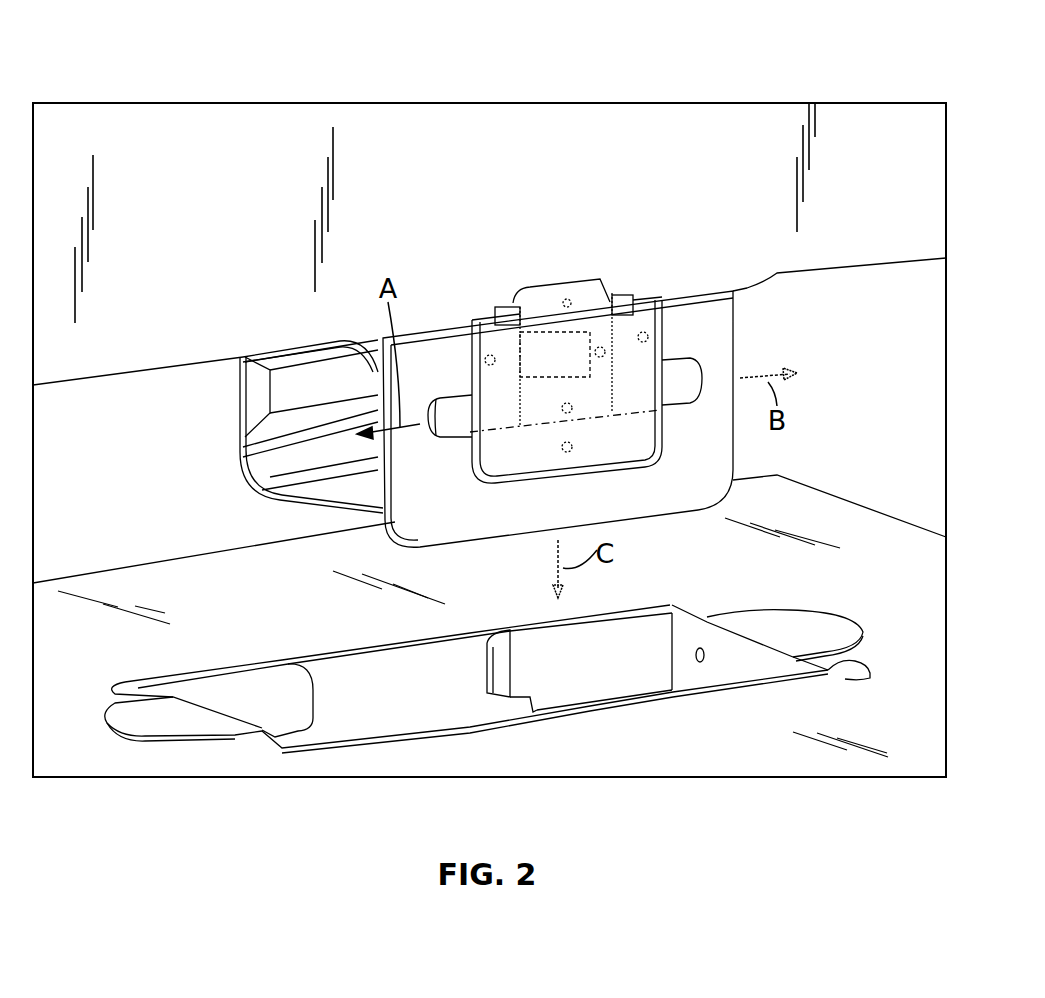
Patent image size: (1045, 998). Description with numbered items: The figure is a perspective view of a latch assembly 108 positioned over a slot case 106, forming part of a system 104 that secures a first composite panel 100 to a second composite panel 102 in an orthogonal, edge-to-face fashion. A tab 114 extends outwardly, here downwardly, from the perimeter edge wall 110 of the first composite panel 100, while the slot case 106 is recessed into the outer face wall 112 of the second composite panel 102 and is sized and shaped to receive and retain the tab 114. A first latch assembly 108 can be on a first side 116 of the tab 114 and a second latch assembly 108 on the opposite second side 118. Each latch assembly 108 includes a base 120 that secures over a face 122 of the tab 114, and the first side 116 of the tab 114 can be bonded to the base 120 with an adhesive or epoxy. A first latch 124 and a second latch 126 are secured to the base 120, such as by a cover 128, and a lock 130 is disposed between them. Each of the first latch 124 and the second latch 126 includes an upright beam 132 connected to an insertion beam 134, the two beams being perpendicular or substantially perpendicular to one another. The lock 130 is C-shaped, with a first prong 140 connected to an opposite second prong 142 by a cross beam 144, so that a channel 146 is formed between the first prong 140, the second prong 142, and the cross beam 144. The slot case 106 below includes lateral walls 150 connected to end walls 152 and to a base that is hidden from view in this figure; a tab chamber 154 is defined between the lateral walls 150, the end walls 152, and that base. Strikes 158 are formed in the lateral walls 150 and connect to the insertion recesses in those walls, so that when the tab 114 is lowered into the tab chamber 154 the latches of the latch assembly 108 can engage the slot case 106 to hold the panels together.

The first composite panel 100 is at (745, 137).
The second composite panel 102 is at (892, 517).
The system 104 is at (838, 404).
The slot case 106 is at (357, 640).
The latch assembly 108 is at (240, 383).
The perimeter edge wall 110 is at (108, 378).
The outer face wall 112 is at (843, 517).
The tab 114 is at (277, 477).
The first side 116 is at (383, 513).
The second side 118 is at (233, 450).
The base 120 is at (722, 435).
The face 122 is at (737, 298).
The first latch 124 is at (457, 433).
The second latch 126 is at (700, 353).
The cover 128 is at (663, 303).
The lock 130 is at (604, 297).
The upright beam 132 is at (627, 297).
The insertion beam 134 is at (458, 407).
The first prong 140 is at (580, 295).
The second prong 142 is at (587, 407).
The cross beam 144 is at (593, 340).
The channel 146 is at (543, 360).
The lateral walls 150 is at (520, 667).
The end walls 152 is at (833, 662).
The tab chamber 154 is at (650, 670).
The strikes 158 is at (530, 700).